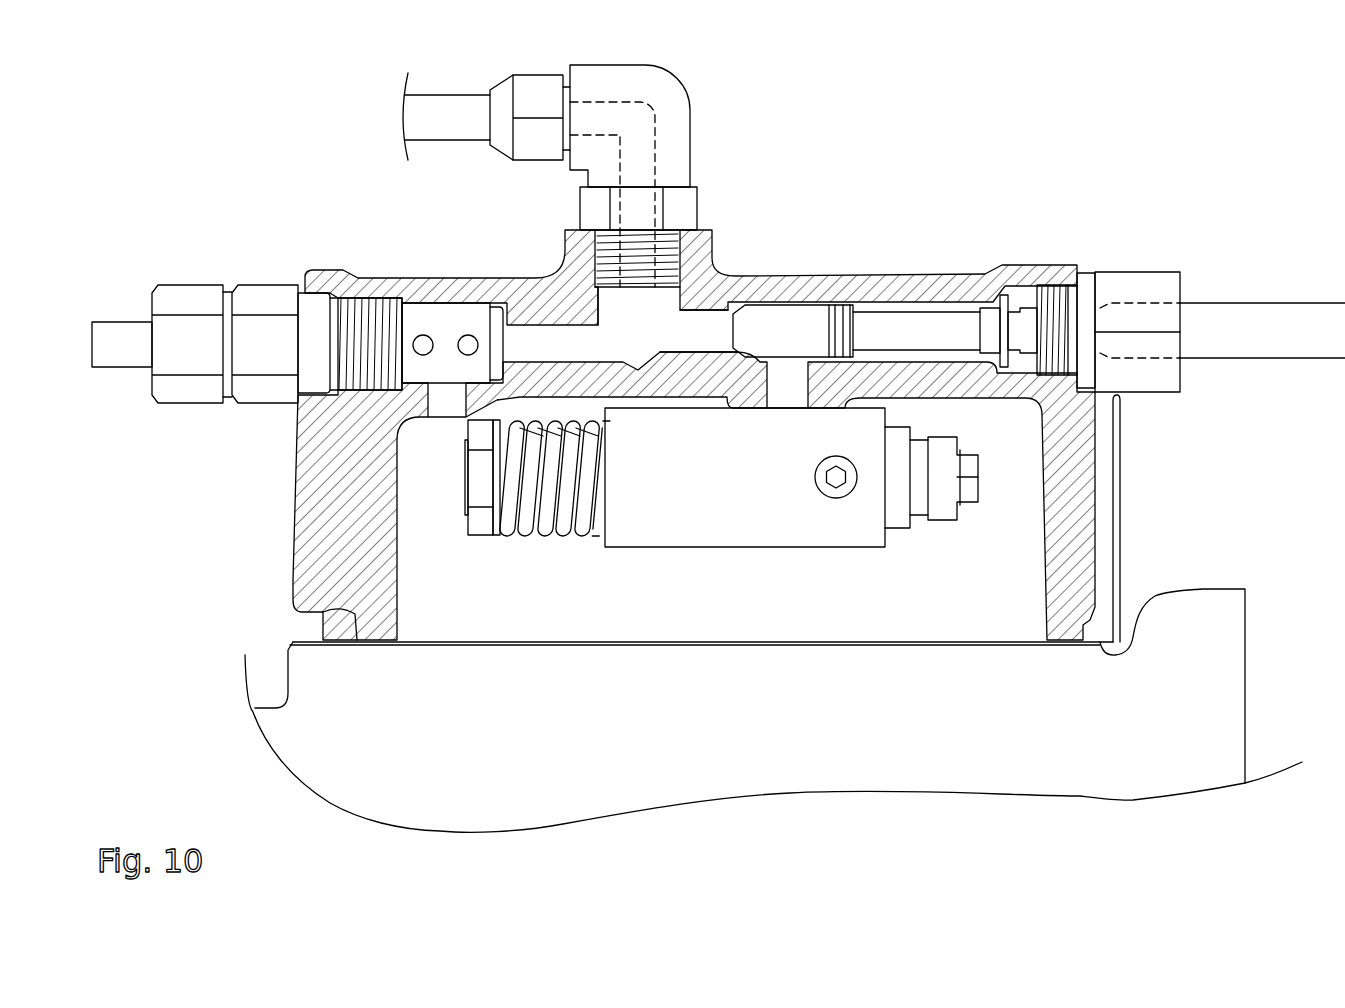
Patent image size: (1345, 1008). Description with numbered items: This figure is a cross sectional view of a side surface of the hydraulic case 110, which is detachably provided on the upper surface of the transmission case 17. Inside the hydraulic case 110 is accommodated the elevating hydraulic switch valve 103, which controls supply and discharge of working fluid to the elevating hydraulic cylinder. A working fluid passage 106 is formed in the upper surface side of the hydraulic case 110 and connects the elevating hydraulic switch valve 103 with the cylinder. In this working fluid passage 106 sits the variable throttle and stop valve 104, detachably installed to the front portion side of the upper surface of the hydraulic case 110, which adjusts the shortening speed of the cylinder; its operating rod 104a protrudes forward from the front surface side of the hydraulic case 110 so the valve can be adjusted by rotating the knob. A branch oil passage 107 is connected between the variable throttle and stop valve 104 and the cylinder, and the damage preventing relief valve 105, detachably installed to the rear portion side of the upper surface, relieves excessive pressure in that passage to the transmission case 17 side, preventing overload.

The transmission case 17 is at (1229, 673).
The elevating hydraulic switch valve 103 is at (749, 528).
The variable throttle and stop valve 104 is at (788, 337).
The operating rod 104a is at (1248, 314).
The damage preventing relief valve 105 is at (316, 328).
The working fluid passage 106 is at (714, 335).
The branch oil passage 107 is at (531, 343).
The hydraulic case 110 is at (925, 273).